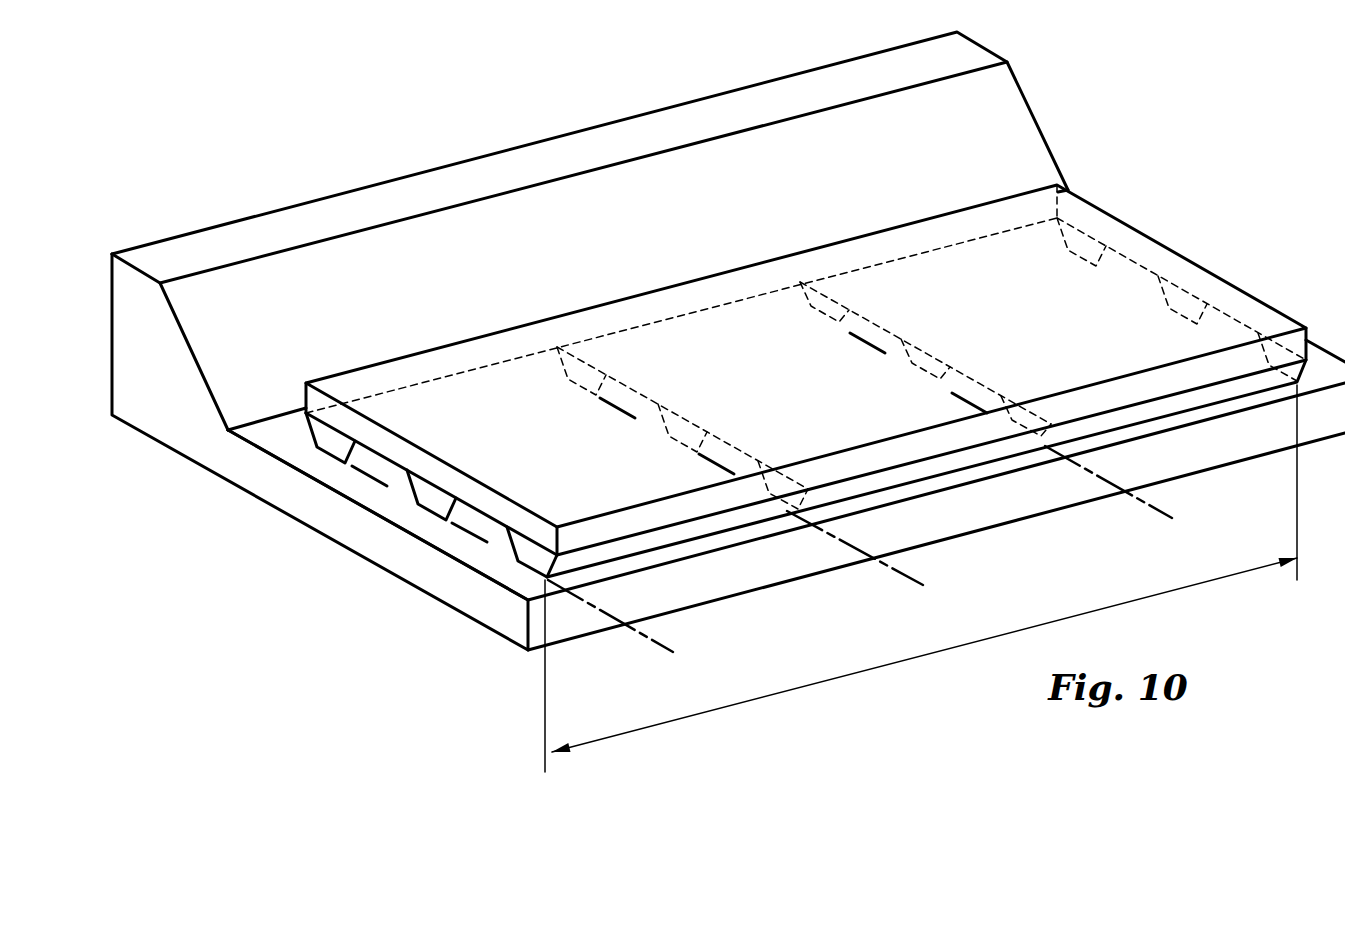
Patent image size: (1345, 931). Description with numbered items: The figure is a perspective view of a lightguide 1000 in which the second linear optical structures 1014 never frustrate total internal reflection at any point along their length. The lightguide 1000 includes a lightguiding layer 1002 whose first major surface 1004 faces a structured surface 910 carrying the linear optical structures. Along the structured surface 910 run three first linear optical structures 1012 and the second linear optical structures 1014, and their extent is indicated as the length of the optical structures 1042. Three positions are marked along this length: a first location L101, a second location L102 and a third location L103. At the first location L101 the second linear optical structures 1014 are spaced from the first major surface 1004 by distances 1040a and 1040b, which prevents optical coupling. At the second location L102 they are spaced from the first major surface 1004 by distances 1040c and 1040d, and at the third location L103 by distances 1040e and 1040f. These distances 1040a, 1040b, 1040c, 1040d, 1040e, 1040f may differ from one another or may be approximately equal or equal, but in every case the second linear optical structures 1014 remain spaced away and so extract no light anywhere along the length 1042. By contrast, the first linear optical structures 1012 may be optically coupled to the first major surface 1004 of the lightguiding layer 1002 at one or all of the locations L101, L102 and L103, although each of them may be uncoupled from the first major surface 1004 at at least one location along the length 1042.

The lightguide 1000 is at (1119, 80).
The lightguiding layer 1002 is at (135, 415).
The first major surface 1004 is at (292, 445).
The structured surface 910 is at (593, 558).
The first linear optical structures 1012 is at (333, 435).
The second linear optical structures 1014 is at (390, 466).
The distance 1040a is at (375, 405).
The distance 1040b is at (475, 470).
The distance 1040c is at (623, 343).
The distance 1040d is at (722, 517).
The distance 1040e is at (873, 400).
The distance 1040f is at (975, 450).
The length of the optical structures 1042 is at (832, 678).
The first location L101 is at (652, 643).
The second location L102 is at (903, 581).
The third location L103 is at (1157, 509).